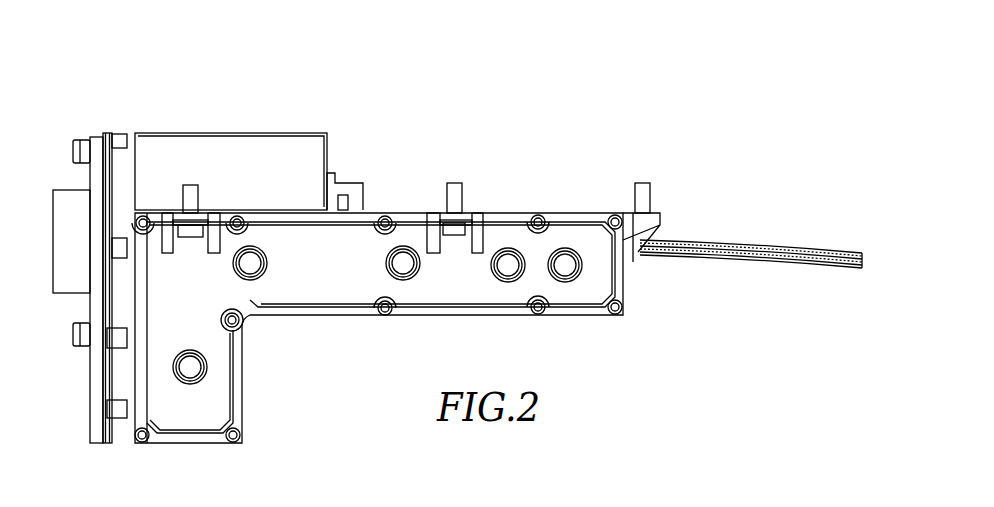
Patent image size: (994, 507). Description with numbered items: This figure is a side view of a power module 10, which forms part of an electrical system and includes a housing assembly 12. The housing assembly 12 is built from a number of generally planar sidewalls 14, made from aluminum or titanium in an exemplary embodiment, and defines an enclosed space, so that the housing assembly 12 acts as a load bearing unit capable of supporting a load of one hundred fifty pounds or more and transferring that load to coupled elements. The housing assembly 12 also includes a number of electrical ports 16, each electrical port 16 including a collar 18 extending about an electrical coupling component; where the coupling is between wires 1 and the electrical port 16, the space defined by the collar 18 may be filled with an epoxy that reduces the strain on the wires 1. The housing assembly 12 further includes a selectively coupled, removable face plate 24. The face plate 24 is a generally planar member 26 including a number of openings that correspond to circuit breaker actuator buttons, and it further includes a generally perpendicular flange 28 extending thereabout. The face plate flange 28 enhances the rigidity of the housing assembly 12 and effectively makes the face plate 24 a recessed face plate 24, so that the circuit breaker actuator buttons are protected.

The wires 1 is at (737, 240).
The power module 10 is at (82, 116).
The housing assembly 12 is at (518, 212).
The sidewalls 14 is at (412, 211).
The electrical ports 16 is at (60, 203).
The collar 18 is at (63, 272).
The face plate 24 is at (330, 287).
The generally planar member 26 is at (462, 288).
The face plate flange 28 is at (578, 320).